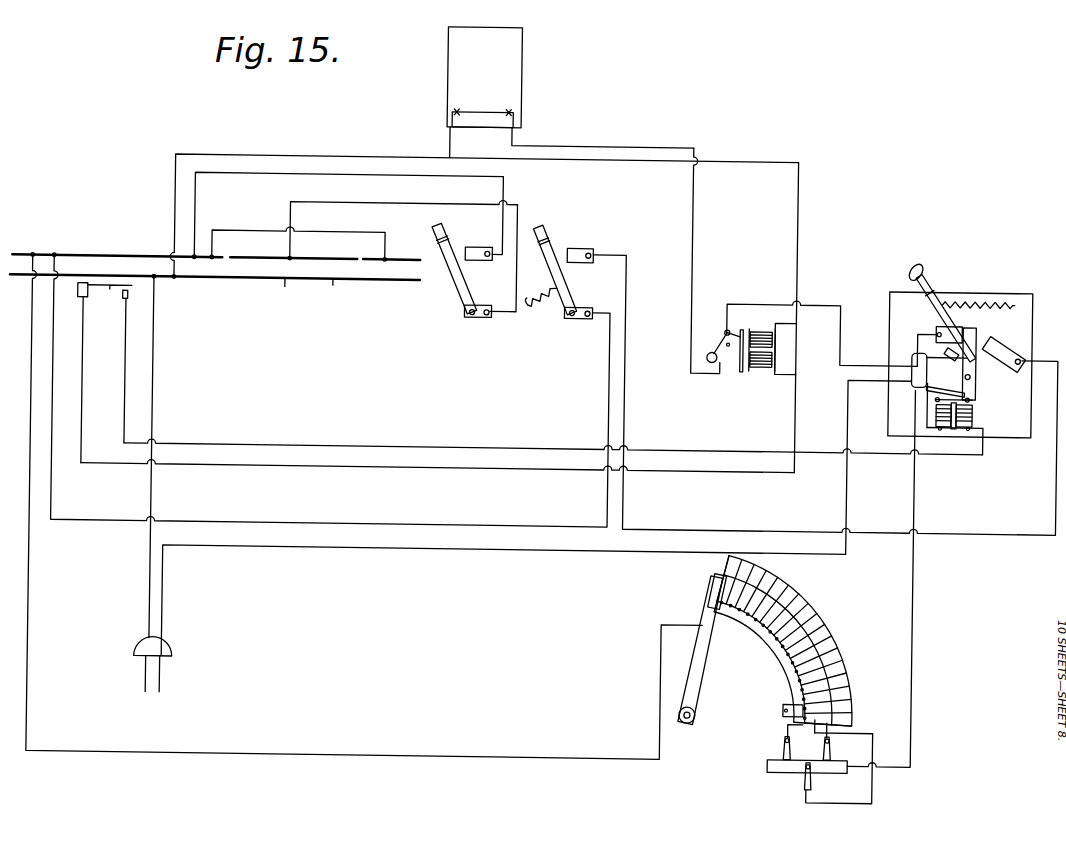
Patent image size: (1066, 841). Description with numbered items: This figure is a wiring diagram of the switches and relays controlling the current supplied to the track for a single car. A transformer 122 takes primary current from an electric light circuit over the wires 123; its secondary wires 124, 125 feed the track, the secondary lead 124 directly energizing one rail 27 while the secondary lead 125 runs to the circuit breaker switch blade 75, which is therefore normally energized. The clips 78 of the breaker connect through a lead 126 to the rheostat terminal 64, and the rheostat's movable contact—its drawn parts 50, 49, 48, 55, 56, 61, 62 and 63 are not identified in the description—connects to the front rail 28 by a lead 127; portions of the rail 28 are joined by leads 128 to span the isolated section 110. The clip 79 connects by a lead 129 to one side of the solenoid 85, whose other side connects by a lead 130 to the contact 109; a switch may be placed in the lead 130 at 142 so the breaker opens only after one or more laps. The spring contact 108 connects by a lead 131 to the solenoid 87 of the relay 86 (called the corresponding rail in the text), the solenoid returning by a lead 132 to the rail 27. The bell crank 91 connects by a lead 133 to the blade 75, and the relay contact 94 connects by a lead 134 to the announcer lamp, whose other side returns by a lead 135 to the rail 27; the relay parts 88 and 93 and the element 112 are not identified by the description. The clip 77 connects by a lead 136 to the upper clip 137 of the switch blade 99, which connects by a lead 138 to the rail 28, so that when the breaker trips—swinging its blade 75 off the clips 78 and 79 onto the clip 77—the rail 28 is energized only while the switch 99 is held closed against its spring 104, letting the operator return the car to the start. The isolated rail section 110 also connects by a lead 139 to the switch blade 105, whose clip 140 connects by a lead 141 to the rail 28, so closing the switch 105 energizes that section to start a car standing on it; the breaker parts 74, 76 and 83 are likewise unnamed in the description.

The front rail 28 is at (93, 262).
The rail 27 is at (285, 285).
The isolated rail section 110 is at (331, 285).
The spring contact 108 is at (108, 304).
The contact 109 is at (127, 298).
The lead 127 is at (386, 757).
The lead 138 is at (279, 526).
The secondary lead 124 is at (152, 588).
The secondary lead 125 is at (165, 605).
The transformer 122 is at (140, 656).
The wires 123 is at (152, 678).
The lead 130 is at (719, 448).
The lead 131 is at (496, 469).
The lead 136 is at (994, 529).
The switch 142 is at (961, 454).
The lead 129 is at (932, 407).
The lead 126 is at (915, 640).
The lead 135 is at (254, 159).
The battery 112 is at (483, 112).
The lead 134 is at (690, 225).
The lead 132 is at (795, 204).
The lead 133 is at (823, 302).
The lead 141 is at (501, 181).
The lead 139 is at (398, 200).
The leads 128 is at (244, 234).
The switch blade 105 is at (461, 287).
The clip 140 is at (477, 235).
The switch blade 99 is at (551, 247).
The upper clip 137 is at (578, 251).
The spring 104 is at (538, 312).
The relay 86 is at (777, 349).
The coil 88 is at (747, 329).
The solenoid 87 is at (759, 330).
The bell crank 91 is at (722, 330).
The armature switch 93 is at (704, 349).
The relay contact 94 is at (727, 344).
The spring 76 is at (984, 299).
The hand lever 74 is at (916, 261).
The clips 78 is at (961, 322).
The clip 77 is at (1009, 334).
The clip 79 is at (945, 351).
The circuit breaker switch blade 75 is at (972, 376).
The armature 83 is at (913, 385).
The solenoid 85 is at (973, 409).
The pointer arm 50 is at (704, 671).
The contact ring 49 is at (776, 635).
The contact segments 48 is at (791, 652).
The sector plate 55 is at (815, 610).
The notched rim 56 is at (822, 624).
The contact bar 61 is at (777, 764).
The contact fingers 62 is at (834, 743).
The contact finger 63 is at (809, 773).
The rheostat terminal 64 is at (851, 766).